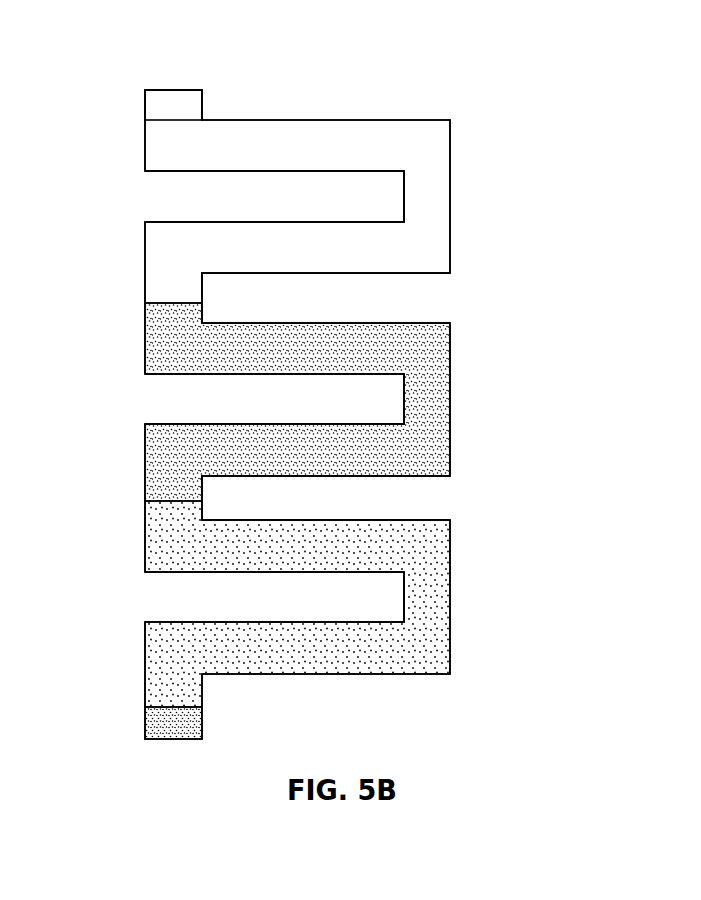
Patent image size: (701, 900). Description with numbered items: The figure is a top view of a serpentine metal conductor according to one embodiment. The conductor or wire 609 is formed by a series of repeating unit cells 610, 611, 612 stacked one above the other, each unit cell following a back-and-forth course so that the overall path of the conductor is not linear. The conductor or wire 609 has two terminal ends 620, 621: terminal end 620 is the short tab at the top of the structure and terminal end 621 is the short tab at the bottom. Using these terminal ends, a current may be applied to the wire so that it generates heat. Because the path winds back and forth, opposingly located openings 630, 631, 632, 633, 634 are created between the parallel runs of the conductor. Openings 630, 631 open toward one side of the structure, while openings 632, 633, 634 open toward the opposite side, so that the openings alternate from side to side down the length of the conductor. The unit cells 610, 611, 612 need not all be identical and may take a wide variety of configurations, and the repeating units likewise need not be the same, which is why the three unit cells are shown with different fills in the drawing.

The conductor or wire 609 is at (305, 82).
The unit cell 610 is at (432, 195).
The unit cell 611 is at (432, 395).
The unit cell 612 is at (432, 592).
The terminal end 620 is at (170, 90).
The terminal end 621 is at (170, 739).
The opening 630 is at (432, 298).
The opening 631 is at (432, 498).
The opening 632 is at (160, 197).
The opening 633 is at (160, 397).
The opening 634 is at (160, 598).